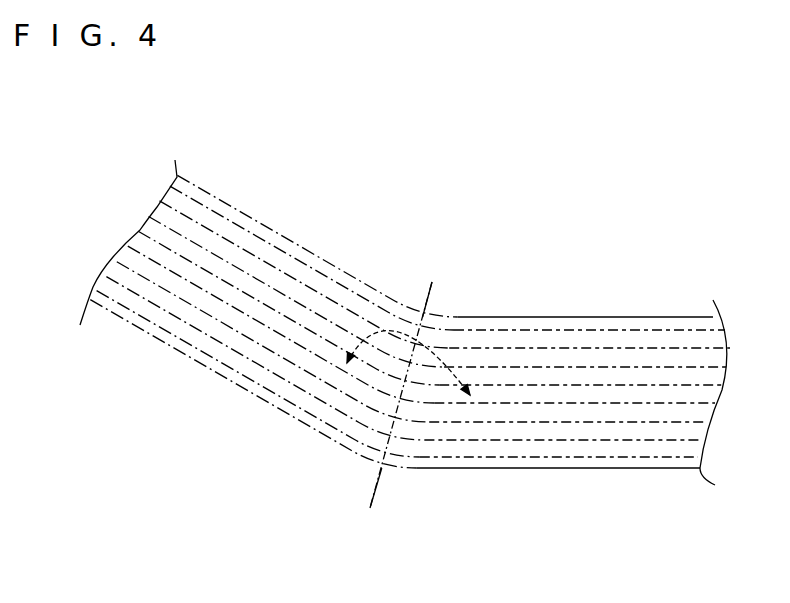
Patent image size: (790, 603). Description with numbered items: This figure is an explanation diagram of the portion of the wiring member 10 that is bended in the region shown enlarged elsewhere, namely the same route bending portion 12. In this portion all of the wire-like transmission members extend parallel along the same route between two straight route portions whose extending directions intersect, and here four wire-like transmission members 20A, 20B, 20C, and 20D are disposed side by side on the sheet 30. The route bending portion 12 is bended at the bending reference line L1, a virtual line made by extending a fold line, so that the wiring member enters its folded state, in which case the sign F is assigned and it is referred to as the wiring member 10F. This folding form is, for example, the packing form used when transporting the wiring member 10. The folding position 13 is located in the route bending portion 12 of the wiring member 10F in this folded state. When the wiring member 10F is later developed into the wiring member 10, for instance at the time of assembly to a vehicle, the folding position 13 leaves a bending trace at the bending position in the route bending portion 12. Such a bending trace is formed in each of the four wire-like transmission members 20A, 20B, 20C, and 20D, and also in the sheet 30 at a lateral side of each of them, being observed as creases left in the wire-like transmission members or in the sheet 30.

The wiring member 10 is at (235, 200).
The wiring member in folded state 10F is at (572, 413).
The route bending portion 12 is at (414, 297).
The folding position 13 is at (377, 460).
The bending reference line L1 is at (433, 284).
The wire-like transmission member 20A is at (596, 445).
The wire-like transmission member 20B is at (660, 410).
The wire-like transmission member 20C is at (600, 372).
The wire-like transmission member 20D is at (670, 333).
The sheet 30 is at (223, 378).